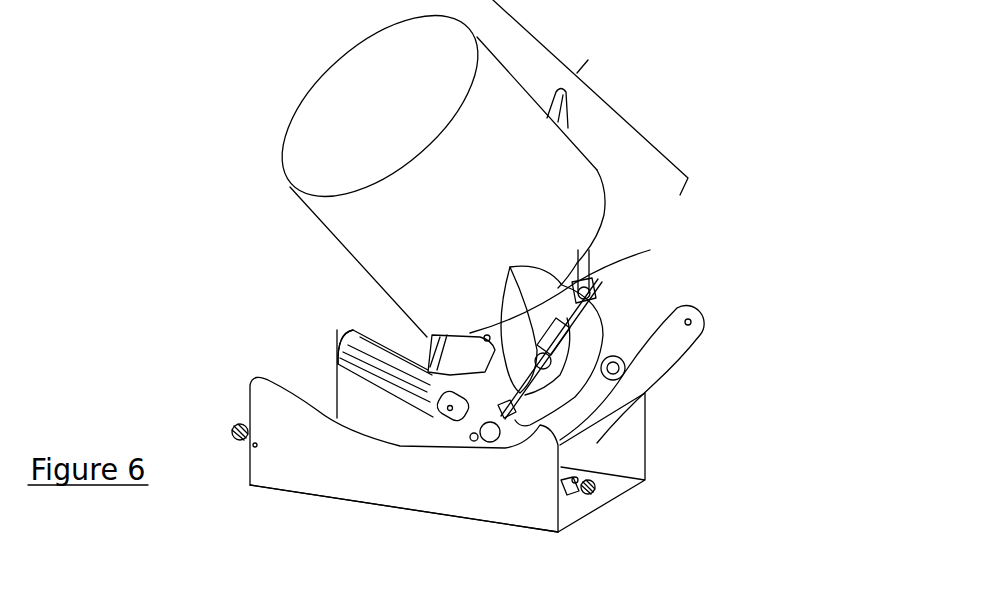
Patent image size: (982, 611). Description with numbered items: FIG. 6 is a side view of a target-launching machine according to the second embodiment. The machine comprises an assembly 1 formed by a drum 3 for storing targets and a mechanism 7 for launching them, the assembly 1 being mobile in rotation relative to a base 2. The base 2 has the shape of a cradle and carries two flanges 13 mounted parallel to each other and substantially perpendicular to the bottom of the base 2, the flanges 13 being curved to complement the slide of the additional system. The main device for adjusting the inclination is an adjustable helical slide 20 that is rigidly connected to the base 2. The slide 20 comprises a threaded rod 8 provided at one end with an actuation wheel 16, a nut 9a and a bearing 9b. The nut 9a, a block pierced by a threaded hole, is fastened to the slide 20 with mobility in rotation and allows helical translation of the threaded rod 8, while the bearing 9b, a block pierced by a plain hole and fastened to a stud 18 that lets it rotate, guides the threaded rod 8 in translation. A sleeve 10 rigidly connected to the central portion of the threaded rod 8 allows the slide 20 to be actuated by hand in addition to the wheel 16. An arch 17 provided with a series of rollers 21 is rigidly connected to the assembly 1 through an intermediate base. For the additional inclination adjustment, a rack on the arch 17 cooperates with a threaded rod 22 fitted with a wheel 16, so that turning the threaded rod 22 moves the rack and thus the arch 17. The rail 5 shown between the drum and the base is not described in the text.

The assembly 1 is at (590, 97).
The base 2 is at (241, 487).
The drum 3 is at (284, 150).
The guide rail 5 is at (347, 353).
The mechanism for launching targets 7 is at (452, 355).
The threaded rod 8 is at (503, 382).
The nut 9a is at (514, 418).
The bearing 9b is at (580, 287).
The sleeve 10 is at (560, 343).
The flanges 13 is at (325, 462).
The actuation wheel 16 is at (238, 432).
The arch 17 is at (677, 338).
The stud 18 is at (507, 315).
The adjustable helical slide 20 is at (430, 372).
The rollers 21 is at (615, 385).
The threaded rod 22 is at (563, 482).